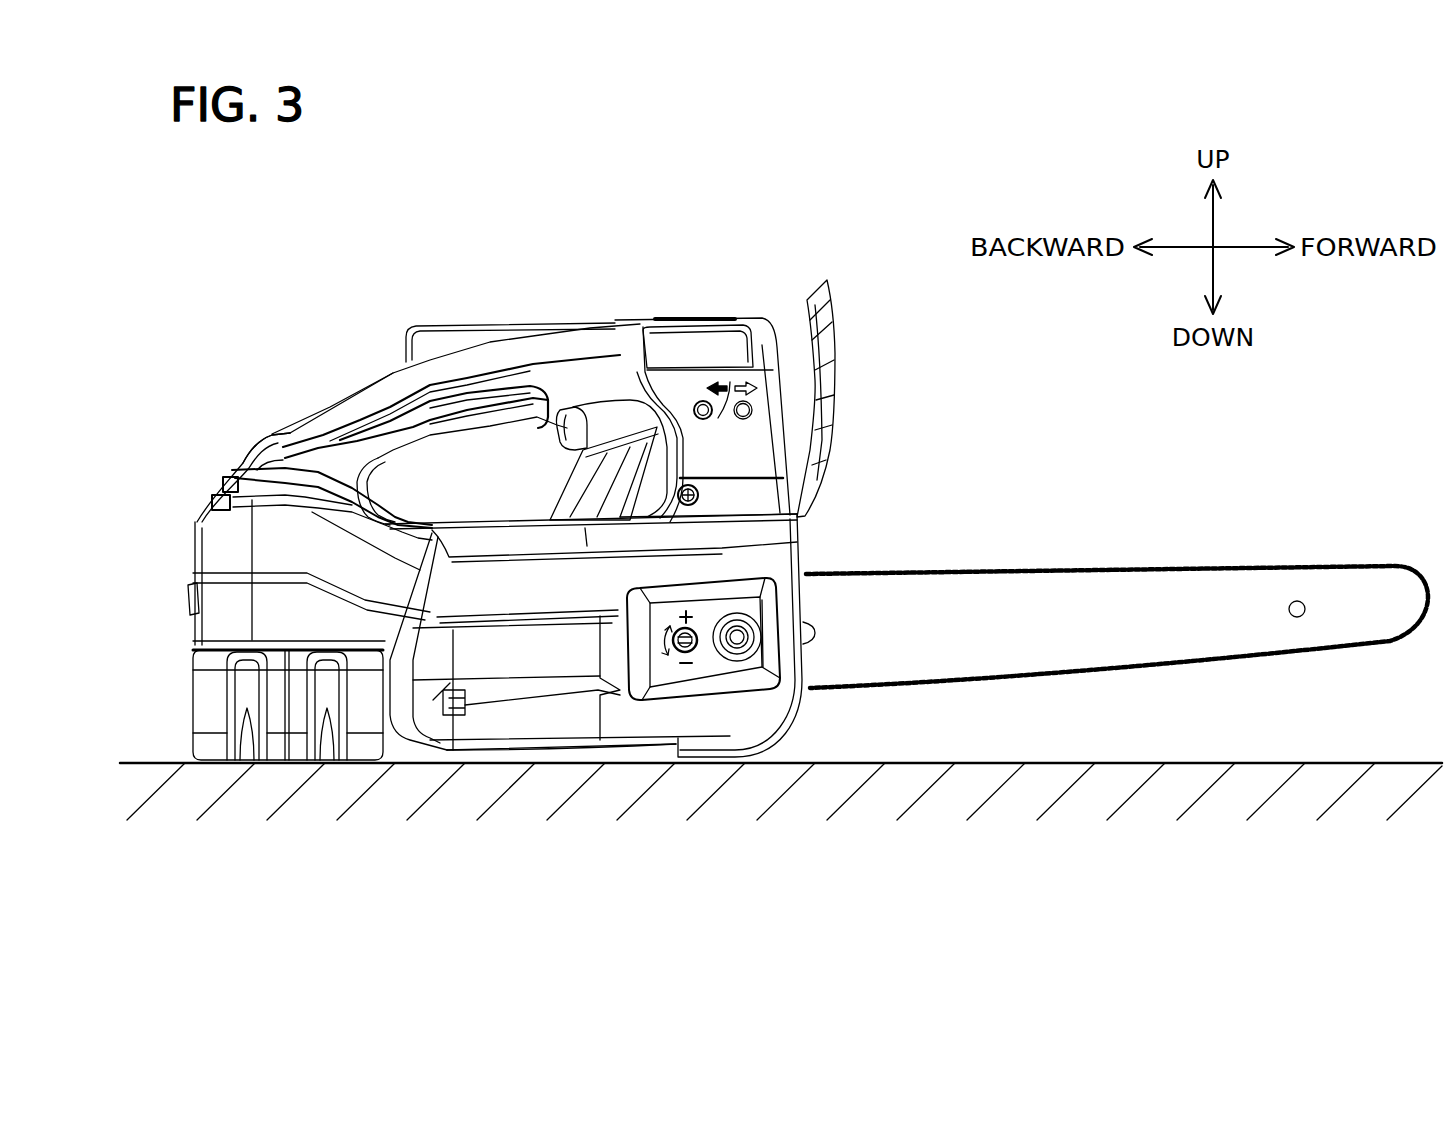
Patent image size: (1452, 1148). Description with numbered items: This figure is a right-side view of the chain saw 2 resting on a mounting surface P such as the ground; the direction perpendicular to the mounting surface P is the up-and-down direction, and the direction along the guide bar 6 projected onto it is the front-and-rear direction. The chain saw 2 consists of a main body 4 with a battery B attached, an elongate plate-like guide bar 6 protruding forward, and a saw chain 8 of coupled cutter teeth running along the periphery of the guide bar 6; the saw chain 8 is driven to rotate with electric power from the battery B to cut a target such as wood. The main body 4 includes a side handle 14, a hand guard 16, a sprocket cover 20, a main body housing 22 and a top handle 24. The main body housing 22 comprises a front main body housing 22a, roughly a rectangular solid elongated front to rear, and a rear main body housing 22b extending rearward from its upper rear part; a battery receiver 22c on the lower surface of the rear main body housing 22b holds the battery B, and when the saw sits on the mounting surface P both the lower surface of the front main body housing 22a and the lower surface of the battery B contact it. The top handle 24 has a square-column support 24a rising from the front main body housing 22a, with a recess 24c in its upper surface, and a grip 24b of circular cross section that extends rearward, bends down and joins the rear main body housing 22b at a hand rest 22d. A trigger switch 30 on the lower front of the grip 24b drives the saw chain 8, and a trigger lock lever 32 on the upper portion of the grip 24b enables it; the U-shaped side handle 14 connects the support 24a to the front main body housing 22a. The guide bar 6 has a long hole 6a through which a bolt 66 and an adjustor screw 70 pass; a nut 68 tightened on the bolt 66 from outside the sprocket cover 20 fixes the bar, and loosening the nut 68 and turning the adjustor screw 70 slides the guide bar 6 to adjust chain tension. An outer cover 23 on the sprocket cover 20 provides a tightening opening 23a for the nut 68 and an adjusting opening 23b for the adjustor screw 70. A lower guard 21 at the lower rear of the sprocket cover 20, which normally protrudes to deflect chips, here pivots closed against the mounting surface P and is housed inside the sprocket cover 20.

The chain saw 2 is at (930, 185).
The main body 4 is at (577, 212).
The guide bar 6 is at (1138, 588).
The long hole 6a is at (812, 640).
The saw chain 8 is at (1255, 565).
The side handle 14 is at (580, 507).
The hand guard 16 is at (830, 334).
The sprocket cover 20 is at (760, 553).
The lower guard 21 is at (452, 752).
The main body housing 22 is at (393, 590).
The front main body housing 22a is at (607, 755).
The rear main body housing 22b is at (218, 553).
The battery receiver 22c is at (252, 500).
The hand rest 22d is at (263, 447).
The outer cover 23 is at (743, 605).
The tightening opening 23a is at (765, 665).
The adjusting opening 23b is at (685, 655).
The top handle 24 is at (468, 363).
The support 24a is at (790, 470).
The grip 24b is at (423, 383).
The recess 24c is at (717, 320).
The trigger switch 30 is at (602, 420).
The trigger lock lever 32 is at (498, 337).
The bolt 66 is at (740, 662).
The nut 68 is at (746, 660).
The adjustor screw 70 is at (733, 662).
The battery B is at (212, 727).
The mounting surface P is at (1360, 762).